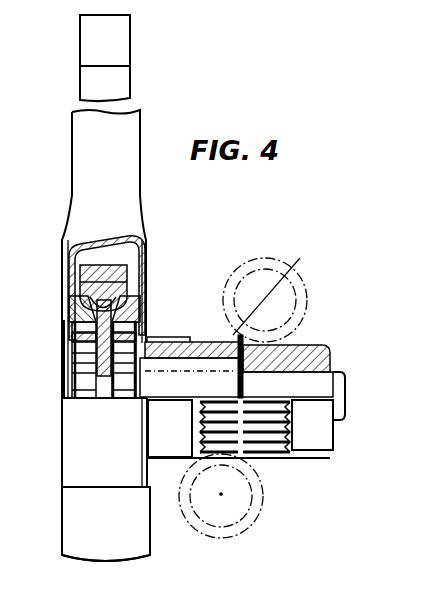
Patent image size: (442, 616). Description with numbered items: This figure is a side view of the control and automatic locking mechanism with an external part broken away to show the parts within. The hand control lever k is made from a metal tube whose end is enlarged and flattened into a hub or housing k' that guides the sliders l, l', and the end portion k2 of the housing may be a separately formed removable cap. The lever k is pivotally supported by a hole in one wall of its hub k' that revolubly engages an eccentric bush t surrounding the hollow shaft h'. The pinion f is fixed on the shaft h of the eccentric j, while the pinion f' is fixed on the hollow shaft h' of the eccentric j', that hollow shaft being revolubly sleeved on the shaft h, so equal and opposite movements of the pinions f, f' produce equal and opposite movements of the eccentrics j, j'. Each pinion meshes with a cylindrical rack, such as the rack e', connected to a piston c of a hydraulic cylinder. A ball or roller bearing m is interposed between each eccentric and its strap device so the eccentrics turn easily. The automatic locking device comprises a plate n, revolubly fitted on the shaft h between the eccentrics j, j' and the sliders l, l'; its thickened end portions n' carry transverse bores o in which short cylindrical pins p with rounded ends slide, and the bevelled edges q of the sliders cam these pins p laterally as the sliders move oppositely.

The hand control lever k is at (126, 58).
The transverse bore o is at (123, 236).
The end portion of plate n' is at (70, 282).
The cylindrical pin p is at (95, 300).
The slider l is at (59, 311).
The plate n is at (71, 324).
The ball or roller bearing m is at (125, 363).
The eccentric j is at (170, 423).
The hub or housing k' is at (84, 524).
The end portion of the housing k2 is at (145, 556).
The eccentric bush t is at (165, 340).
The slider l' is at (192, 284).
The bevelled edge q is at (152, 342).
The eccentric j' is at (190, 335).
The pinion f' is at (264, 331).
The shaft h is at (329, 388).
The pinion f is at (249, 447).
The piston c is at (310, 300).
The hollow shaft h' is at (277, 289).
The cylindrical rack e' is at (237, 496).